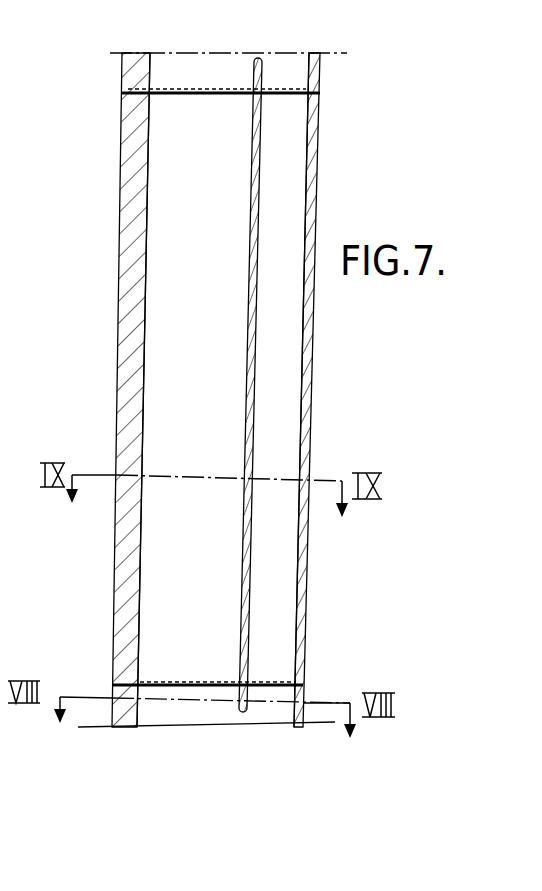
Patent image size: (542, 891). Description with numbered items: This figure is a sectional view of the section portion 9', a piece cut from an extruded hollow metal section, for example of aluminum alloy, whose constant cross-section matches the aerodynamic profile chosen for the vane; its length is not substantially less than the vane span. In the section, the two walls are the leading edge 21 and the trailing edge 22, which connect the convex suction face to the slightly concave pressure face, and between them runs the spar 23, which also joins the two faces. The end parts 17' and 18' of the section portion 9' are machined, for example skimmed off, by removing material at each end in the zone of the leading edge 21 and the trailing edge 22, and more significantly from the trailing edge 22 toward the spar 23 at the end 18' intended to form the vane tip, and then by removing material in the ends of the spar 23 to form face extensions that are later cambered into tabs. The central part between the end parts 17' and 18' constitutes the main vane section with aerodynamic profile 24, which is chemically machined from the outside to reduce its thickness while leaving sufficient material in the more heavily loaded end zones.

The end part 17' is at (228, 45).
The end part 18' is at (214, 739).
The section portion 9' is at (254, 390).
The leading edge 21 is at (311, 372).
The trailing edge 22 is at (132, 357).
The spar 23 is at (252, 245).
The main vane section with aerodynamic profile 24 is at (287, 431).